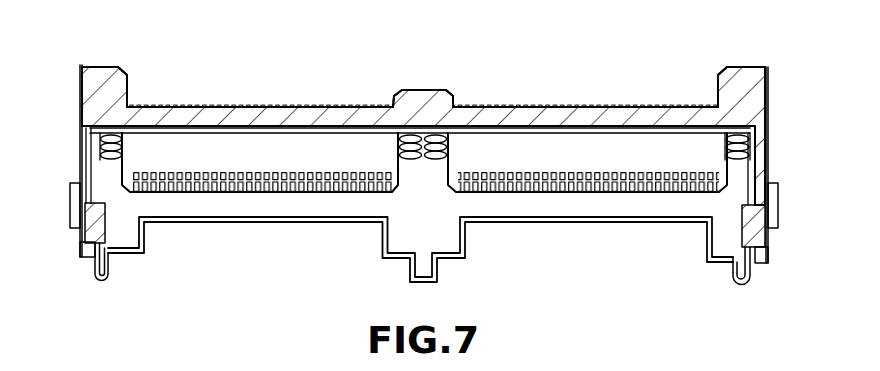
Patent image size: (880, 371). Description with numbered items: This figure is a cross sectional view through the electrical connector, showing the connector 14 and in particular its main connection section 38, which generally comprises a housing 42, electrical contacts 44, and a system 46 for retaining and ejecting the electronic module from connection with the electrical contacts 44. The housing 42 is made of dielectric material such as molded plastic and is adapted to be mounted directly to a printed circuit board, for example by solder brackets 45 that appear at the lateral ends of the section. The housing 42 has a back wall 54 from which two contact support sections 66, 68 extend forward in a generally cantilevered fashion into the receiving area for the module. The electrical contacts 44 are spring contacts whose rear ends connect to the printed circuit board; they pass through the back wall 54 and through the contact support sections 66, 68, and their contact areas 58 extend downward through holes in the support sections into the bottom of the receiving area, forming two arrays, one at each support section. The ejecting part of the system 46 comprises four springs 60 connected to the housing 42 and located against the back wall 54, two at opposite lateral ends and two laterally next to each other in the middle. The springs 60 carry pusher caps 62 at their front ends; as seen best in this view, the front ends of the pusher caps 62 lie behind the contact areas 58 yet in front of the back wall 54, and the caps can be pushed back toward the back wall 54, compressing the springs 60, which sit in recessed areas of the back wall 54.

The connector assembly 14 is at (78, 46).
The main connection section 38 is at (80, 90).
The housing 42 is at (204, 107).
The electrical contacts 44 is at (252, 190).
The solder brackets 45 is at (70, 213).
The system for retaining and ejecting the electronic module 46 is at (90, 128).
The back wall 54 is at (287, 115).
The contact areas 58 is at (317, 190).
The springs 60 is at (108, 116).
The pusher caps 62 is at (100, 150).
The contact support section 66 is at (165, 160).
The contact support section 68 is at (615, 150).